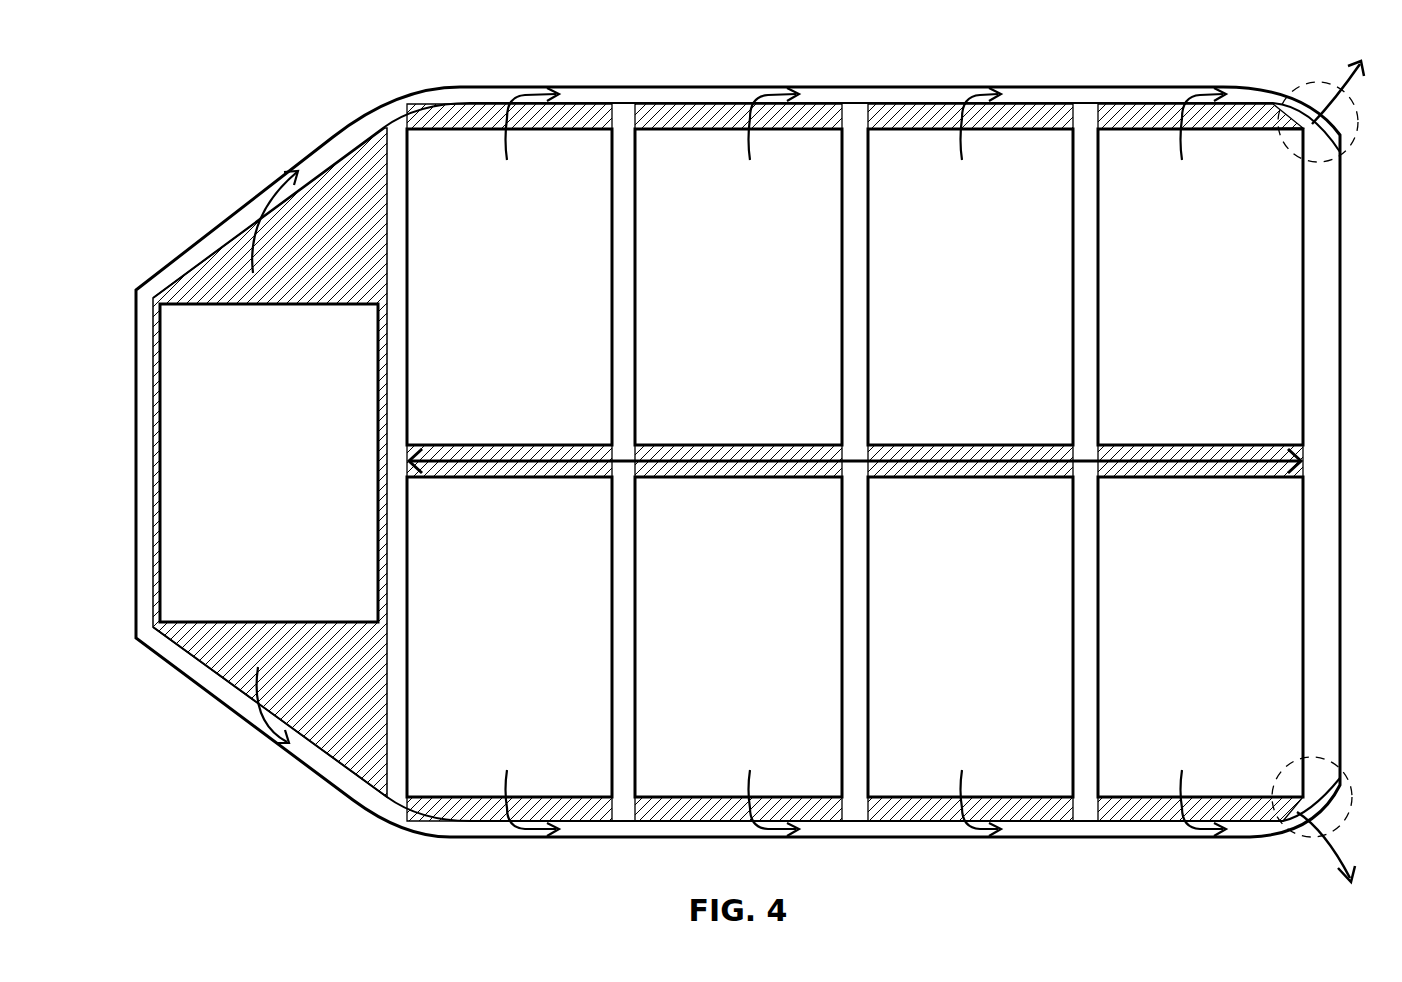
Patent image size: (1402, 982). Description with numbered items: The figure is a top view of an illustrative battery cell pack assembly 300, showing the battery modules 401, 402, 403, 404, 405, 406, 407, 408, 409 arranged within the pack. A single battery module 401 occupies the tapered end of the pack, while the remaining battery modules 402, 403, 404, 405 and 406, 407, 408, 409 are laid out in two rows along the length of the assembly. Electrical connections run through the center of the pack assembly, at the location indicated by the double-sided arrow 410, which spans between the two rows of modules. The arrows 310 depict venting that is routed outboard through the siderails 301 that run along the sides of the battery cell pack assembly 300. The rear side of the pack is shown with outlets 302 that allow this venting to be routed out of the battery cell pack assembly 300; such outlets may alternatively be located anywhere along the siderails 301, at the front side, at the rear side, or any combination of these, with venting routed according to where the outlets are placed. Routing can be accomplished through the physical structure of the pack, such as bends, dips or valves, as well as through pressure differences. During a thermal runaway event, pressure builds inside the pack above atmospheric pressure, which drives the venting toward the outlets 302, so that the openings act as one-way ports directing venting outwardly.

The battery cell pack assembly 300 is at (762, 31).
The siderails 301 is at (905, 95).
The outlets 302 is at (1300, 78).
The arrows 310 is at (397, 130).
The battery module 401 is at (245, 475).
The battery module 402 is at (486, 299).
The battery module 403 is at (715, 299).
The battery module 404 is at (946, 299).
The battery module 405 is at (1176, 299).
The battery module 406 is at (1176, 647).
The battery module 407 is at (946, 647).
The battery module 408 is at (715, 647).
The battery module 409 is at (486, 647).
The double-sided arrow 410 is at (1262, 447).